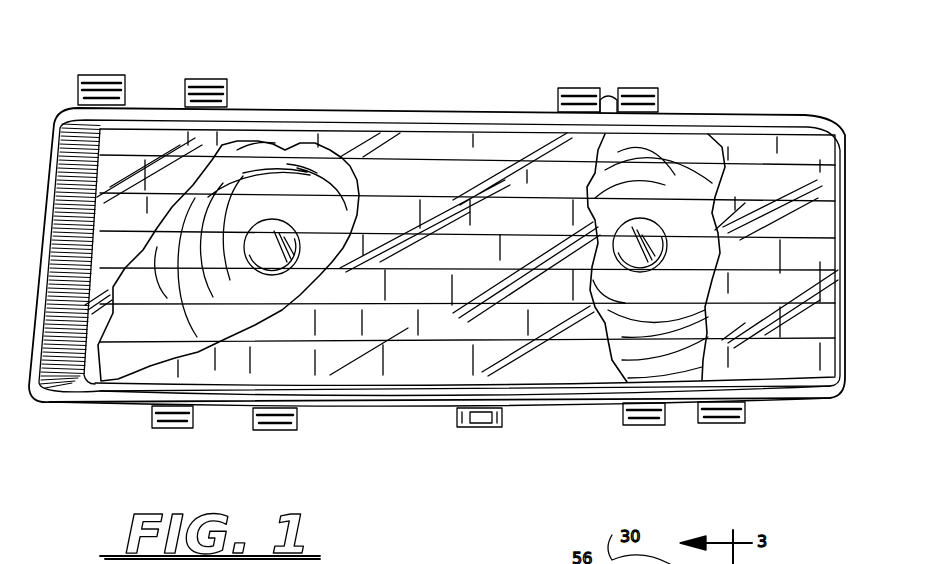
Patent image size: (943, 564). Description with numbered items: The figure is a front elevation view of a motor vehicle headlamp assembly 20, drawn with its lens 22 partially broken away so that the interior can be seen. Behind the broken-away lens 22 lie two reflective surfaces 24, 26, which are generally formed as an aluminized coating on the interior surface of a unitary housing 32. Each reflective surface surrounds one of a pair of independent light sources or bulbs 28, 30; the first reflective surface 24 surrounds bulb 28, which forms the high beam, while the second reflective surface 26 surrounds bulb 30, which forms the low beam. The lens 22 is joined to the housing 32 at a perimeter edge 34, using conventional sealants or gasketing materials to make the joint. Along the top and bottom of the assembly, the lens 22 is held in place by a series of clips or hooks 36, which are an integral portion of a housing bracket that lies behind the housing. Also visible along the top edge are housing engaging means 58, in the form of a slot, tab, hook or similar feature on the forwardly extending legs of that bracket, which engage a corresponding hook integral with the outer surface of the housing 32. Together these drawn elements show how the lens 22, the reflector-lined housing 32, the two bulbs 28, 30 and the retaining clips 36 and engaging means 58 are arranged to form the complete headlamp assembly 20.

The headlamp assembly 20 is at (407, 70).
The lens 22 is at (402, 367).
The reflective surface 24 is at (283, 153).
The reflective surface 26 is at (650, 200).
The bulb 28 is at (278, 225).
The bulb 30 is at (640, 224).
The housing 32 is at (678, 373).
The perimeter edge 34 is at (93, 398).
The clips 36 is at (128, 100).
The housing engaging means 58 is at (228, 100).